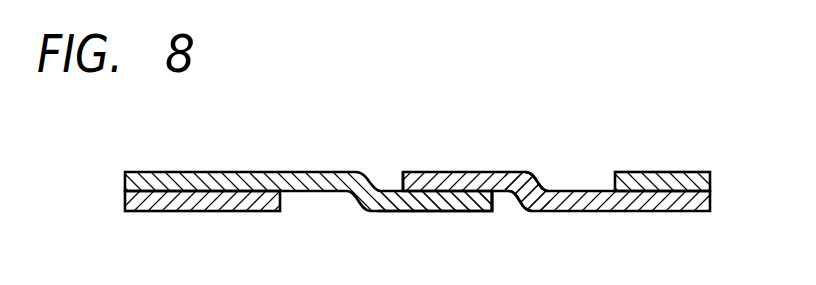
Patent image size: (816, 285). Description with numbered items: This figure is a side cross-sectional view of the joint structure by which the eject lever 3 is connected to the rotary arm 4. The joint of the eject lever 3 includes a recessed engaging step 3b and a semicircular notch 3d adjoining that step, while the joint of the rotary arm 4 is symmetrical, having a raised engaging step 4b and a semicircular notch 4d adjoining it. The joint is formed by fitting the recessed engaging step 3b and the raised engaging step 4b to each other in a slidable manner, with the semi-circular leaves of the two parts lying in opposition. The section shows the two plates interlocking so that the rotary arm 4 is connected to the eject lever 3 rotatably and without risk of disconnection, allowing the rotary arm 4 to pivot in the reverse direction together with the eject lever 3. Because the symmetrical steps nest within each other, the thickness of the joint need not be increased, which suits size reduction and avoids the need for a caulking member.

The eject lever 3 is at (243, 172).
The recessed engaging step 3b is at (383, 212).
The semicircular notch 3d is at (514, 212).
The rotary arm 4 is at (679, 206).
The raised engaging step 4b is at (520, 172).
The semicircular notch 4d is at (388, 172).